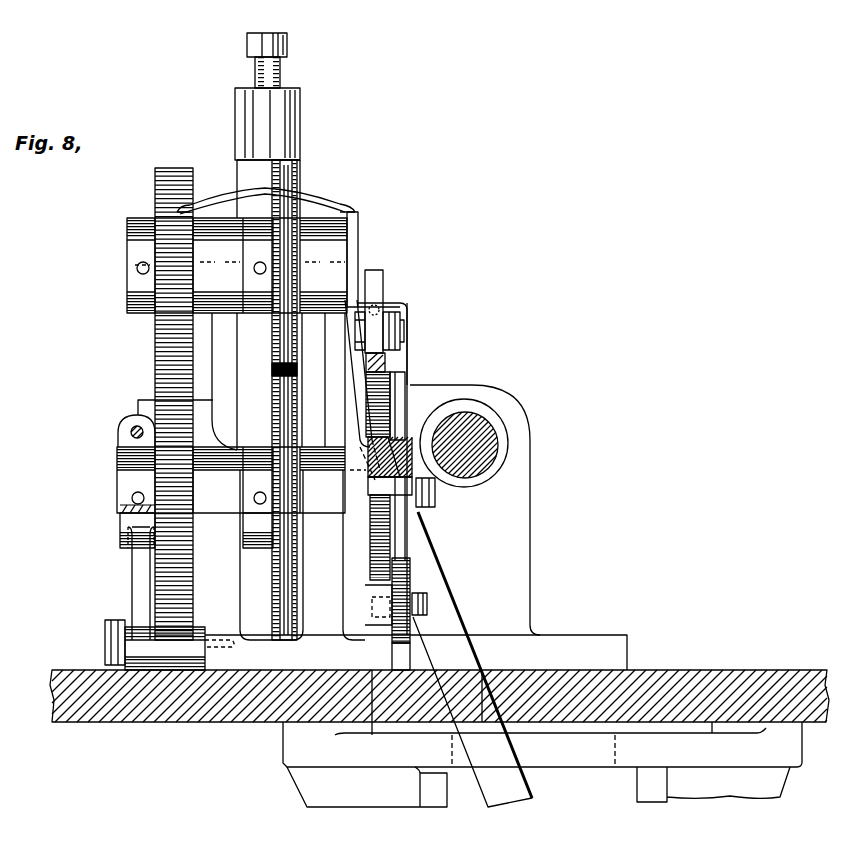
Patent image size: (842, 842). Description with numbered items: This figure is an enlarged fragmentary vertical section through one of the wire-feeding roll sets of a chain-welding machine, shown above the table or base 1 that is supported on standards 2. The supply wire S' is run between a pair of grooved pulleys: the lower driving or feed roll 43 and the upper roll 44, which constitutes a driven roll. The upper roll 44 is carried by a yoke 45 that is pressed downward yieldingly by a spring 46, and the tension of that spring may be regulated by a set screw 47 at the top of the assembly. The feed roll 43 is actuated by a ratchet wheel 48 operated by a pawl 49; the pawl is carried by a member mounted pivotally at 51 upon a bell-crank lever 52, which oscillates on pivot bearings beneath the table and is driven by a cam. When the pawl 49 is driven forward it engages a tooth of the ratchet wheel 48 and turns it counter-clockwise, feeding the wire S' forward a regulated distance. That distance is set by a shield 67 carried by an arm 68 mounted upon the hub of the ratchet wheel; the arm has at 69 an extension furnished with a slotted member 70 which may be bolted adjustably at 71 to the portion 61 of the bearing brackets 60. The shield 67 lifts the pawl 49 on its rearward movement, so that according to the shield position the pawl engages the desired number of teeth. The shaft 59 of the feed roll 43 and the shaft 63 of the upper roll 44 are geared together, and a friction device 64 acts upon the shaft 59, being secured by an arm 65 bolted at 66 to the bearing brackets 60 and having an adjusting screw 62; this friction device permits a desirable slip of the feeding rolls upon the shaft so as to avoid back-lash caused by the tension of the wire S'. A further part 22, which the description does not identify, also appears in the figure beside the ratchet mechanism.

The table or base 1 is at (708, 668).
The standards 2 is at (782, 778).
The frame standard 22 is at (476, 435).
The driving or feed roll 43 is at (273, 402).
The upper roll 44 is at (296, 275).
The yoke 45 is at (358, 228).
The spring 46 is at (312, 197).
The set screw 47 is at (289, 47).
The ratchet wheel 48 is at (378, 402).
The pawl 49 is at (400, 352).
The pivot 51 is at (400, 328).
The bell-crank lever 52 is at (345, 388).
The shaft 59 is at (118, 492).
The bearing brackets 60 is at (416, 570).
The portion of the bearing brackets 61 is at (368, 610).
The adjusting screw 62 is at (133, 428).
The shaft 63 is at (126, 263).
The friction device 64 is at (118, 440).
The arm 65 is at (130, 585).
The bolt 66 is at (108, 640).
The shield 67 is at (392, 372).
The arm 68 is at (398, 417).
The extension 69 is at (405, 553).
The slotted member 70 is at (411, 579).
The bolt 71 is at (430, 601).
The wire S' is at (268, 367).